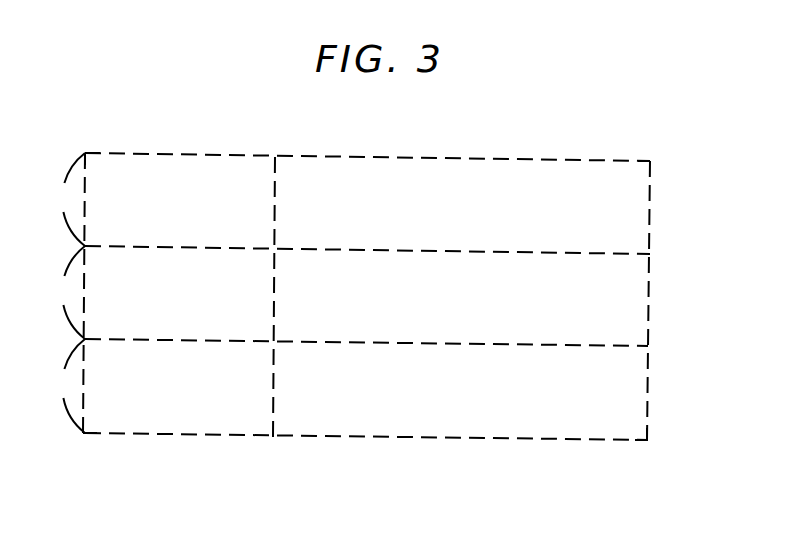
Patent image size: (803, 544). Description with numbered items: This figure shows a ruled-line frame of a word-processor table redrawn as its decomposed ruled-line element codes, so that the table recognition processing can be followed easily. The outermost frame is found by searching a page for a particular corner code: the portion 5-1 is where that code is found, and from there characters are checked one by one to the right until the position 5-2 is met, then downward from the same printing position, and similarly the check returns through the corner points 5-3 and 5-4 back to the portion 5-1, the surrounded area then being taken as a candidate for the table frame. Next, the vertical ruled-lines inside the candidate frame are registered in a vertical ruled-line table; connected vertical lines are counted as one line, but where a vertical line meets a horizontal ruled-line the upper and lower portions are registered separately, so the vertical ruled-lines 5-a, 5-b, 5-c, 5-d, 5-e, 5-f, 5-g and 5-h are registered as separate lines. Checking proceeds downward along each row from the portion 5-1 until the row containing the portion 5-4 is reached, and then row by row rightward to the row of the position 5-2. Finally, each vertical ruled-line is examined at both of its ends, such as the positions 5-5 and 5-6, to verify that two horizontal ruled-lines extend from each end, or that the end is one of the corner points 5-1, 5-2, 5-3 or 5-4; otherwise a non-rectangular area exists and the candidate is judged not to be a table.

The table frame corner portion 5-1 is at (100, 153).
The table frame corner position 5-2 is at (638, 161).
The table frame corner point 5-3 is at (632, 440).
The table frame corner portion 5-4 is at (85, 433).
The upper end position of vertical ruled-line 5-5 is at (287, 170).
The lower end position of vertical ruled-line 5-6 is at (274, 440).
The vertical ruled-line 5-a is at (66, 199).
The vertical ruled-line 5-b is at (63, 292).
The vertical ruled-line 5-c is at (260, 138).
The vertical ruled-line 5-d is at (230, 280).
The vertical ruled-line 5-e is at (243, 398).
The vertical ruled-line 5-f is at (653, 206).
The vertical ruled-line 5-g is at (652, 304).
The vertical ruled-line 5-h is at (651, 397).